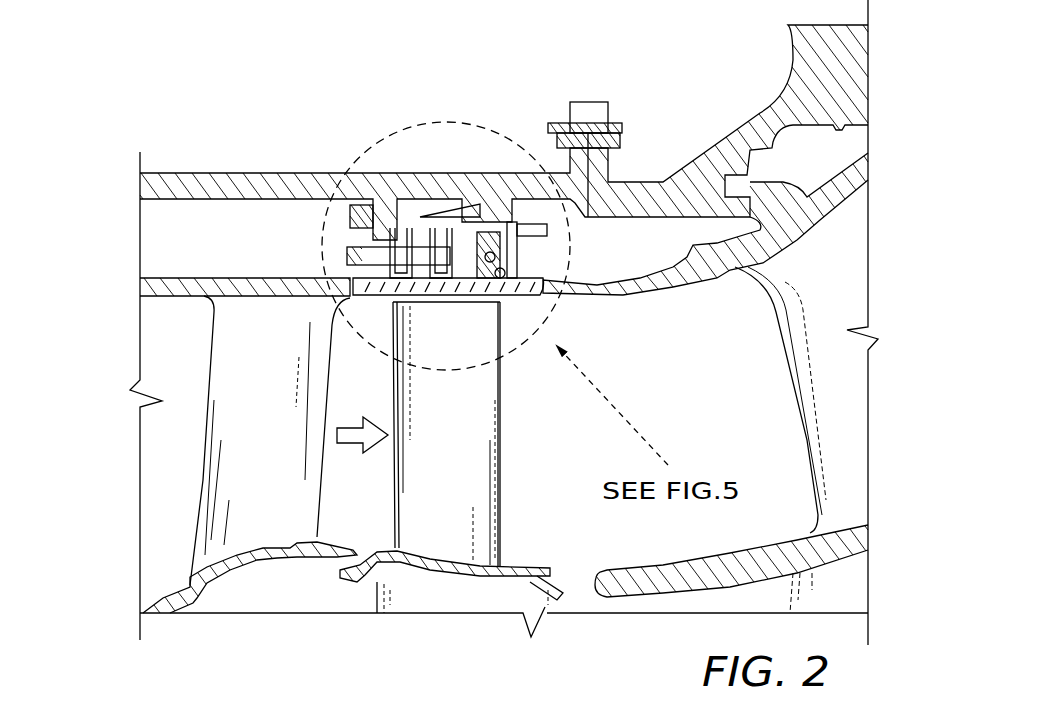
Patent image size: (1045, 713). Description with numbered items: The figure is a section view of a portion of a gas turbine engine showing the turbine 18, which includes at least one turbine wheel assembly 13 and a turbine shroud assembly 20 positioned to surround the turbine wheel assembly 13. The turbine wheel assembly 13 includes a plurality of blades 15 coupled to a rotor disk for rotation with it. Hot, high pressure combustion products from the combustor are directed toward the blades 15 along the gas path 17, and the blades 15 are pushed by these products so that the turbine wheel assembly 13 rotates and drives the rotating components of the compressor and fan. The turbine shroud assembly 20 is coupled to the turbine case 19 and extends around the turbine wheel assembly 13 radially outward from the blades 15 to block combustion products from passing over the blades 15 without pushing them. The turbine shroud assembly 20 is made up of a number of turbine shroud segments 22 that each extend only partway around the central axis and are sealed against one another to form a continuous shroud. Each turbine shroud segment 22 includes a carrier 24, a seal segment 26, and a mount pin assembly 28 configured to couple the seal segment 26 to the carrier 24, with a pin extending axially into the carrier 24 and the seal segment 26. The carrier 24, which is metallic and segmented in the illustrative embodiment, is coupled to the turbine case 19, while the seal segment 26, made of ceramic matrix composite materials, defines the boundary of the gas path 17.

The turbine wheel assembly 13 is at (198, 403).
The blades 15 is at (500, 511).
The gas path 17 is at (366, 376).
The turbine 18 is at (180, 123).
The turbine case 19 is at (258, 172).
The turbine shroud assembly 20 is at (493, 125).
The turbine shroud segment 22 is at (424, 210).
The carrier 24 is at (346, 238).
The seal segment 26 is at (383, 302).
The mount pin assembly 28 is at (345, 249).